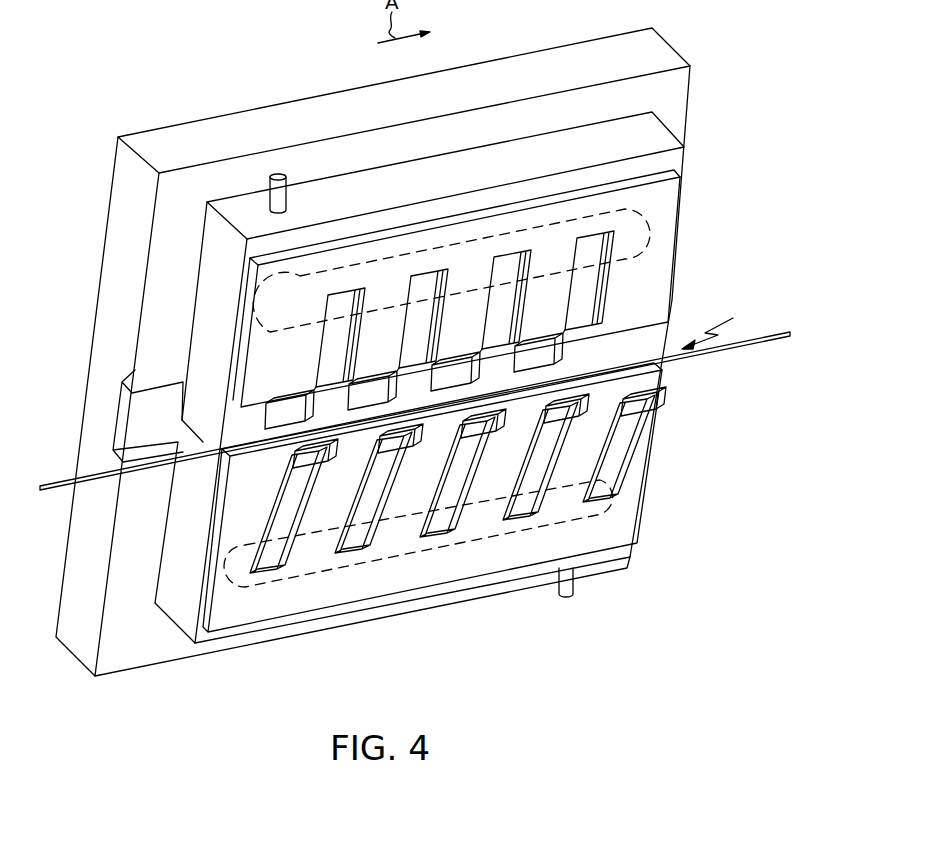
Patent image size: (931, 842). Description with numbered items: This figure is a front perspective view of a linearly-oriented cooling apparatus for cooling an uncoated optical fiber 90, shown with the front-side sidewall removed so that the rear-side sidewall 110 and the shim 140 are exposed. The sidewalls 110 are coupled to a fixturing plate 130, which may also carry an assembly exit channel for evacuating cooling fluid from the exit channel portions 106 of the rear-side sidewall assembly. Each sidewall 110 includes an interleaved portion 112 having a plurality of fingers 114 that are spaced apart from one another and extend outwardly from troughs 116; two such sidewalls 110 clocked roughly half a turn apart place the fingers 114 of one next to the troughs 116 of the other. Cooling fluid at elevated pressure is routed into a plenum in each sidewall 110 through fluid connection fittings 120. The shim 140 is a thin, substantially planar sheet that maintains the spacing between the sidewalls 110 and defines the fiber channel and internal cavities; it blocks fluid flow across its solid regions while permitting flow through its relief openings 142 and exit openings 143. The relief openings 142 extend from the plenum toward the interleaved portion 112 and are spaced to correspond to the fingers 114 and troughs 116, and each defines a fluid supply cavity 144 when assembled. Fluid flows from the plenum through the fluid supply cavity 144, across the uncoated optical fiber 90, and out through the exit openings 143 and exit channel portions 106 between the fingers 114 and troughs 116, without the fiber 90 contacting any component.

The uncoated optical fiber 90 is at (776, 342).
The exit channel portions 106 is at (370, 442).
The sidewall 110 is at (686, 143).
The interleaved portion 112 is at (726, 322).
The fingers 114 is at (326, 410).
The troughs 116 is at (268, 398).
The fluid connection fittings 120 is at (287, 197).
The fixturing plate 130 is at (677, 50).
The shim 140 is at (669, 245).
The relief openings 142 is at (627, 423).
The exit openings 143 is at (567, 413).
The fluid supply cavity 144 is at (518, 473).